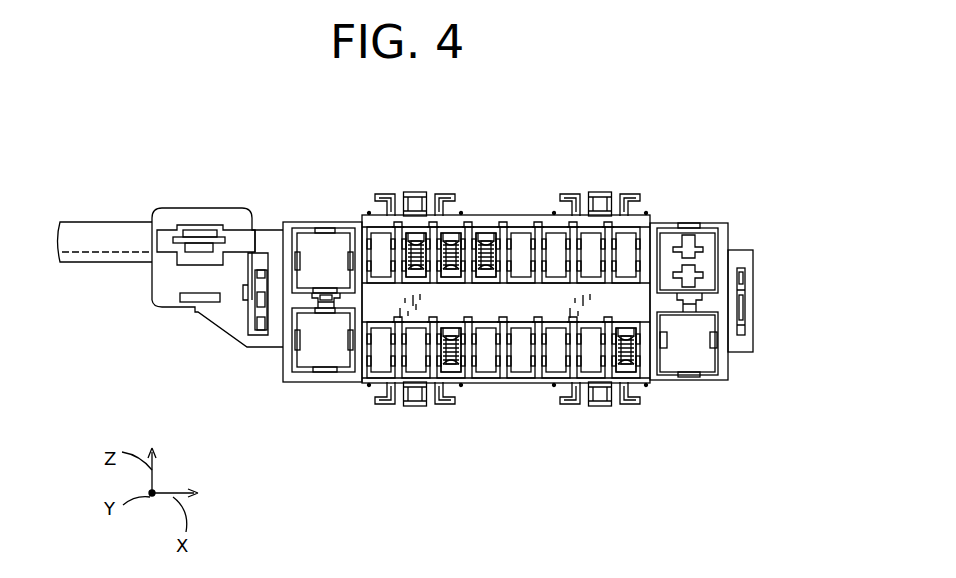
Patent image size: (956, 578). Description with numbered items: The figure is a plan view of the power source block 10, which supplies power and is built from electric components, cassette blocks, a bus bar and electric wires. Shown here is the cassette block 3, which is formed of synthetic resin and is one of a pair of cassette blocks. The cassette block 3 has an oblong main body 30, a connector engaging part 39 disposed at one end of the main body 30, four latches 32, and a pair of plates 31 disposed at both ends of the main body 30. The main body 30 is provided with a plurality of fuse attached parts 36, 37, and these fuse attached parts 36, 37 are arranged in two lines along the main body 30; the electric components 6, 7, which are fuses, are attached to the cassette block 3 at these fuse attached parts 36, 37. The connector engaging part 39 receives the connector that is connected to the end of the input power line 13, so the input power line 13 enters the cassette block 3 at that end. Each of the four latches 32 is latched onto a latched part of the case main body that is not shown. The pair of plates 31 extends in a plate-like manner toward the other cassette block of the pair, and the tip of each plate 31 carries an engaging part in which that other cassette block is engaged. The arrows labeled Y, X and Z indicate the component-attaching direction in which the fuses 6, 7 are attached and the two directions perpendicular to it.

The cassette block 3 is at (656, 218).
The electric component (fuse) 6 is at (588, 247).
The electric component (fuse) 7 is at (307, 271).
The power source block 10 is at (718, 203).
The input power line 13 is at (101, 227).
The main body 30 is at (528, 386).
The plate 31 is at (742, 353).
The latch 32 is at (412, 193).
The fuse attached part 36 is at (504, 248).
The fuse attached part 37 is at (352, 276).
The connector engaging part 39 is at (205, 208).